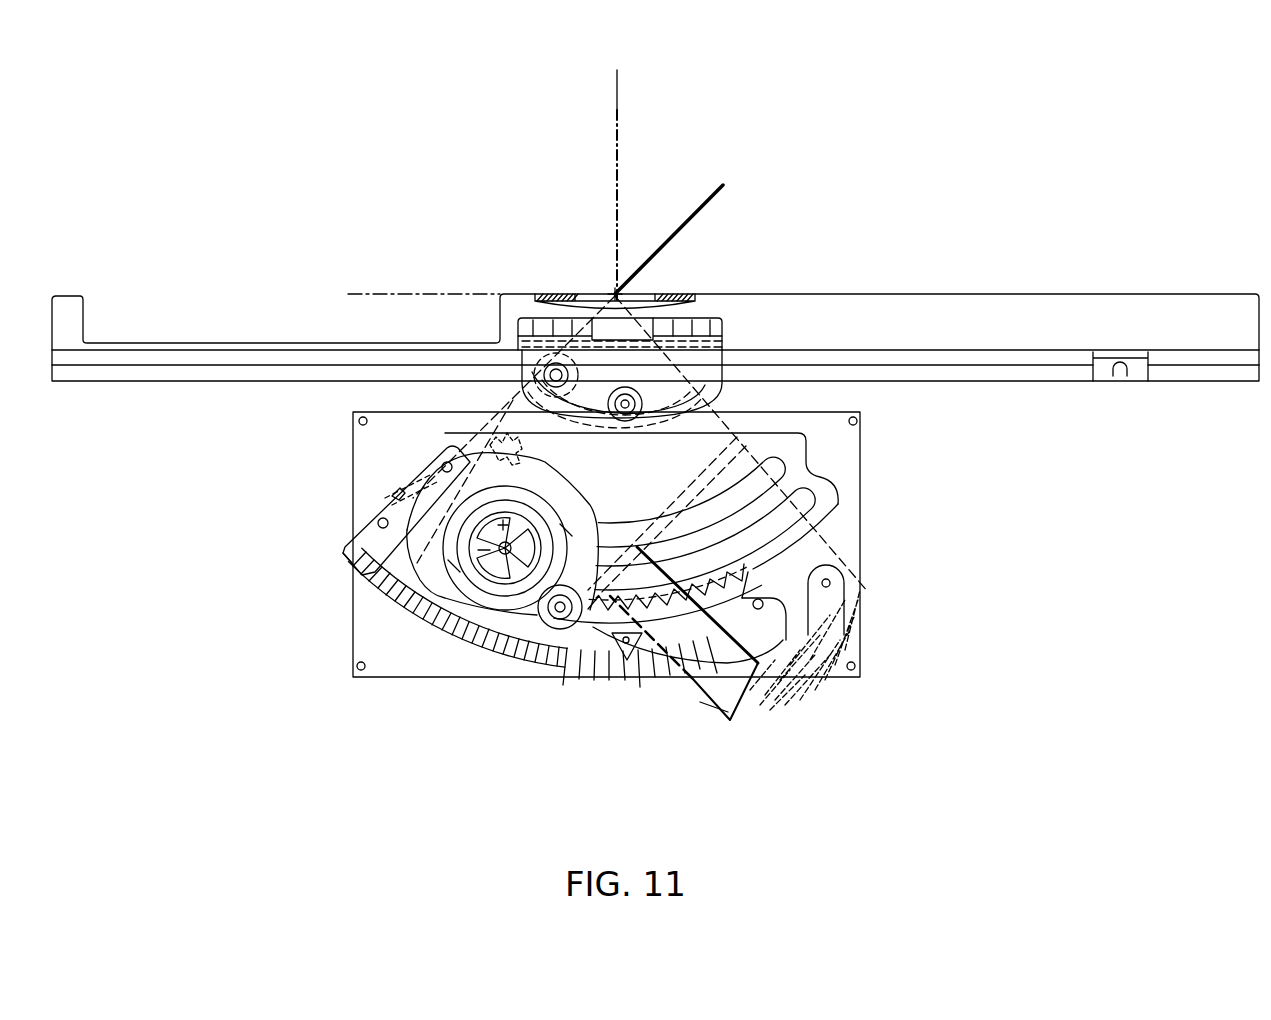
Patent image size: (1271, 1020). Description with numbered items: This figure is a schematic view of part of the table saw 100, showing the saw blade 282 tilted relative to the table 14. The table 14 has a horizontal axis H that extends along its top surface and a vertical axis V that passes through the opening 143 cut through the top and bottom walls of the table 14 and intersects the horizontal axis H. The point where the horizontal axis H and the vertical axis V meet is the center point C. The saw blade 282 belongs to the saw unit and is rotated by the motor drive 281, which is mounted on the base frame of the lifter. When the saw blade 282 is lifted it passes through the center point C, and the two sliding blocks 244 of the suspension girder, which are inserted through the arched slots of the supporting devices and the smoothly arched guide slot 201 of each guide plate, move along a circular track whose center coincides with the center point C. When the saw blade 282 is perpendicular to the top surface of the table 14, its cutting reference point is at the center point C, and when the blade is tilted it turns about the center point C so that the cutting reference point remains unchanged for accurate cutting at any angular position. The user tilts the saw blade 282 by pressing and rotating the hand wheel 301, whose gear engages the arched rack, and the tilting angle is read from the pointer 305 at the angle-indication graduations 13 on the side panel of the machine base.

The table saw 100 is at (962, 184).
The table 14 is at (1106, 295).
The opening 143 is at (588, 292).
The horizontal axis H is at (400, 292).
The vertical axis V is at (617, 120).
The center point C is at (614, 290).
The saw blade 282 is at (700, 213).
The motor drive 281 is at (740, 702).
The sliding blocks 244 is at (578, 392).
The smoothly arched guide slot 201 is at (672, 392).
The pointer 305 is at (350, 553).
The hand wheel 301 is at (493, 625).
The angle-indication graduations 13 is at (415, 612).